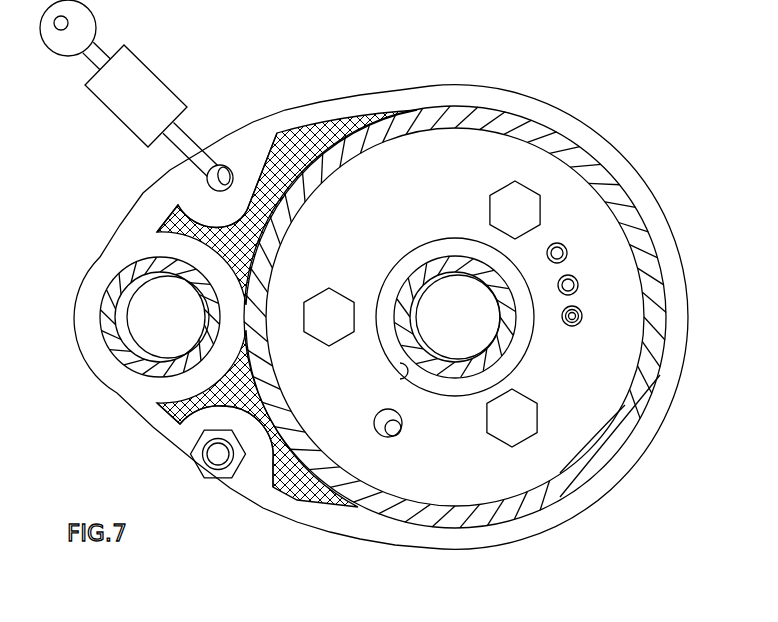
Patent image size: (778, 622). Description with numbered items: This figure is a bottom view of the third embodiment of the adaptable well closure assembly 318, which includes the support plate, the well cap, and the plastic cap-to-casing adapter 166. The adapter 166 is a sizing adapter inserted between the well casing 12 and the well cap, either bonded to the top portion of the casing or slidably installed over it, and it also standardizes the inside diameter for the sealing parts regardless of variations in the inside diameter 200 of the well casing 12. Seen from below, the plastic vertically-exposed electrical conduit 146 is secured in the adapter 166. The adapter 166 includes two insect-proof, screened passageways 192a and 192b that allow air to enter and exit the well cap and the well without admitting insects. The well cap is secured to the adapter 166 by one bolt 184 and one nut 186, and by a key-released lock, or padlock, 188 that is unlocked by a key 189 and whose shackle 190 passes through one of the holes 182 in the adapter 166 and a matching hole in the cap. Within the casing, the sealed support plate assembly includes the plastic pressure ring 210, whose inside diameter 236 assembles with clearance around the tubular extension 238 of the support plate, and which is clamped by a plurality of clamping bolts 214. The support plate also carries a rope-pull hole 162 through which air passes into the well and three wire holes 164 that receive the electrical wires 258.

The well casing 12 is at (466, 140).
The electrical conduit 146 is at (125, 287).
The rope-pull hole 162 is at (394, 436).
The wire holes 164 is at (566, 319).
The cap-to-casing adapter 166 is at (540, 86).
The holes in adapter 182 is at (242, 182).
The bolt 184 is at (204, 468).
The nut 186 is at (193, 440).
The key-released lock 188 is at (148, 63).
The key 189 is at (96, 14).
The shackle 190 is at (165, 152).
The screened passageway 192a is at (152, 197).
The screened passageway 192b is at (173, 420).
The inside diameter of well casing 200 is at (628, 374).
The pressure ring 210 is at (367, 214).
The clamping bolts 214 is at (340, 294).
The inside diameter of pressure ring 236 is at (412, 382).
The tubular extension 238 is at (398, 366).
The electrical wires 258 is at (597, 218).
The adaptable well closure assembly 318 is at (656, 172).